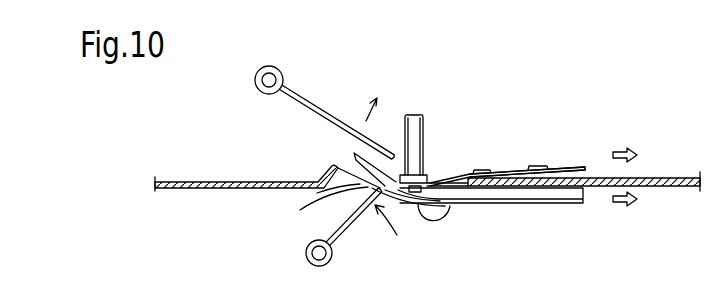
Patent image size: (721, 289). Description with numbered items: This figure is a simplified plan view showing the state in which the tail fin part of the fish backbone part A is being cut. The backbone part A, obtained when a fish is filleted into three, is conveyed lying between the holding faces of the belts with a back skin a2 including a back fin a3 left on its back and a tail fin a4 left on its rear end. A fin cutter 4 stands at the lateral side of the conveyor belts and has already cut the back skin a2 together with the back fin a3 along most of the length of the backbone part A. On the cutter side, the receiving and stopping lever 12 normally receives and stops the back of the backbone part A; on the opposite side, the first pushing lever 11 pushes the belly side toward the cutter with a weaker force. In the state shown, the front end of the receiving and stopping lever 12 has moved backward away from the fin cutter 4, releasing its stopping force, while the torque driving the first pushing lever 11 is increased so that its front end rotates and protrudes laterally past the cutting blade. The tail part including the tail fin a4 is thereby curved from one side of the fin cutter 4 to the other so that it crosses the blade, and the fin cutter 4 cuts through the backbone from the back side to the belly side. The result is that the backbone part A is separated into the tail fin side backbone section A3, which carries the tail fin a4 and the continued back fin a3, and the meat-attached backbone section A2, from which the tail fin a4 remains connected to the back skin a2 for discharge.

The receiving and stopping lever 12 is at (340, 120).
The first pushing lever 11 is at (357, 223).
The tail fin a4 is at (350, 166).
The back skin a2 is at (507, 172).
The back fin a3 is at (546, 166).
The tail fin side backbone section A3 is at (360, 184).
The meat-attached backbone section A2 is at (412, 208).
The backbone part A is at (513, 200).
The fin cutter 4 is at (455, 210).